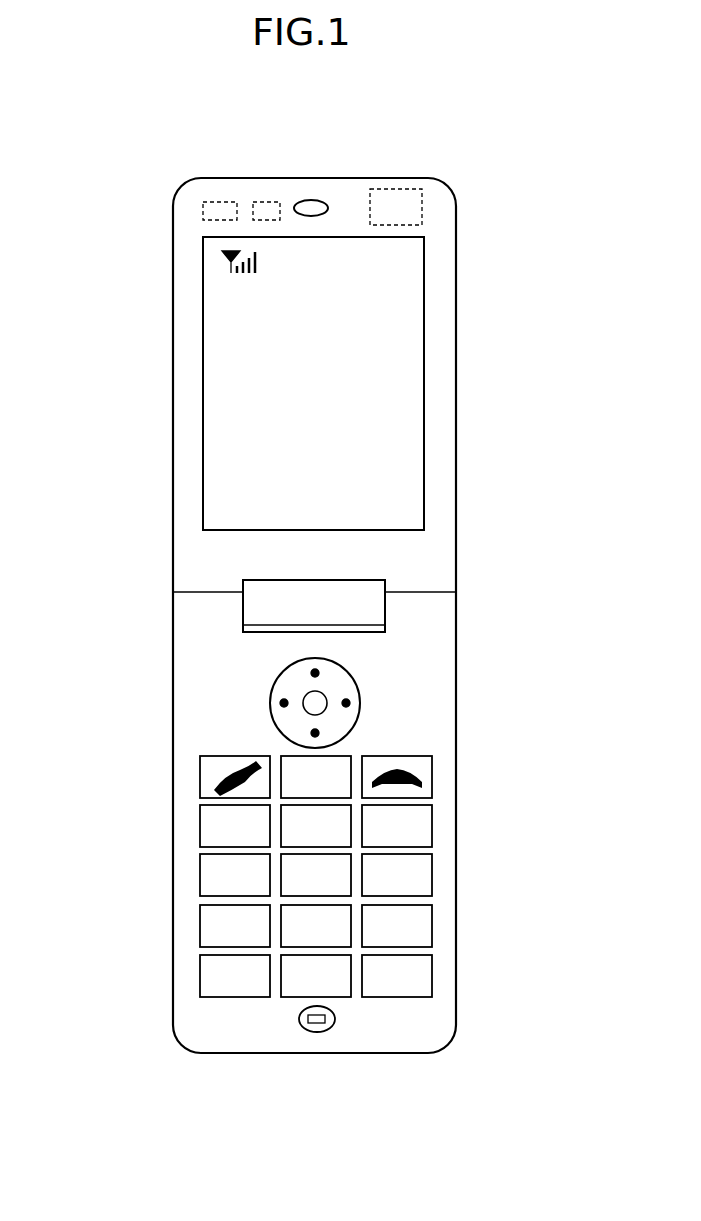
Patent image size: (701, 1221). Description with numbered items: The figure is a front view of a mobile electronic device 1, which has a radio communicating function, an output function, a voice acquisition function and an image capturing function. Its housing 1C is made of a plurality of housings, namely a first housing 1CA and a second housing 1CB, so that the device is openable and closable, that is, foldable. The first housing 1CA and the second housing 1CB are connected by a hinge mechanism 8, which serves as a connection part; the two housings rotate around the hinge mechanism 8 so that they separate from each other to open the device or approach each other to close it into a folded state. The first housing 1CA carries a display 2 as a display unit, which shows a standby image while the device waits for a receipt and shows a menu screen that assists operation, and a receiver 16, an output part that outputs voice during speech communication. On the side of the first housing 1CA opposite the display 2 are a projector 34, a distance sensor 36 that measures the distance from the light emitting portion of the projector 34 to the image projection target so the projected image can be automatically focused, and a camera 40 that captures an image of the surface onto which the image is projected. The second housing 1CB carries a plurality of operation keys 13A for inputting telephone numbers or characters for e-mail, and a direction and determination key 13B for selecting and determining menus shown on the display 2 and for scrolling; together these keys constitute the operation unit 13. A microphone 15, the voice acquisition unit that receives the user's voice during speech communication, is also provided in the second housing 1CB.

The mobile electronic device 1 is at (472, 154).
The display 2 is at (220, 296).
The hinge mechanism 8 is at (478, 589).
The operation unit 13 is at (402, 830).
The operation keys 13A is at (370, 875).
The direction and determination key 13B is at (348, 697).
The microphone 15 is at (315, 1032).
The receiver 16 is at (310, 201).
The projector 34 is at (392, 189).
The distance sensor 36 is at (215, 201).
The camera 40 is at (265, 201).
The housing 1C is at (82, 545).
The first housing 1CA is at (222, 557).
The second housing 1CB is at (222, 671).